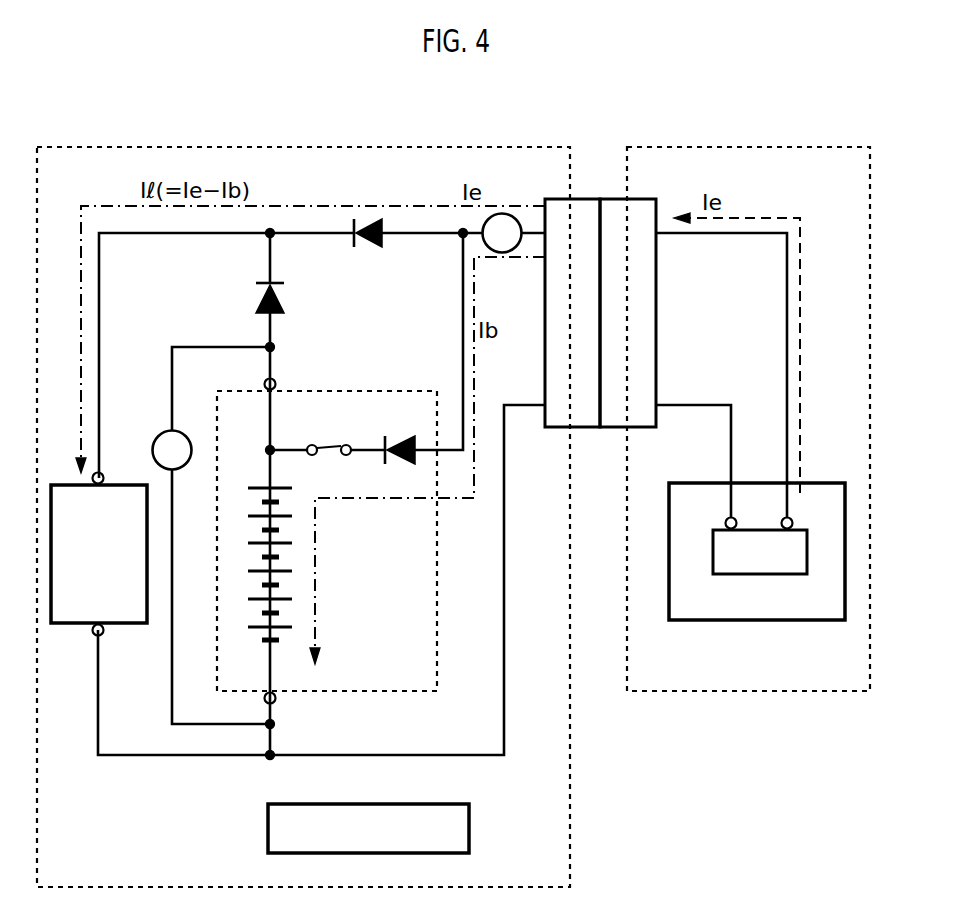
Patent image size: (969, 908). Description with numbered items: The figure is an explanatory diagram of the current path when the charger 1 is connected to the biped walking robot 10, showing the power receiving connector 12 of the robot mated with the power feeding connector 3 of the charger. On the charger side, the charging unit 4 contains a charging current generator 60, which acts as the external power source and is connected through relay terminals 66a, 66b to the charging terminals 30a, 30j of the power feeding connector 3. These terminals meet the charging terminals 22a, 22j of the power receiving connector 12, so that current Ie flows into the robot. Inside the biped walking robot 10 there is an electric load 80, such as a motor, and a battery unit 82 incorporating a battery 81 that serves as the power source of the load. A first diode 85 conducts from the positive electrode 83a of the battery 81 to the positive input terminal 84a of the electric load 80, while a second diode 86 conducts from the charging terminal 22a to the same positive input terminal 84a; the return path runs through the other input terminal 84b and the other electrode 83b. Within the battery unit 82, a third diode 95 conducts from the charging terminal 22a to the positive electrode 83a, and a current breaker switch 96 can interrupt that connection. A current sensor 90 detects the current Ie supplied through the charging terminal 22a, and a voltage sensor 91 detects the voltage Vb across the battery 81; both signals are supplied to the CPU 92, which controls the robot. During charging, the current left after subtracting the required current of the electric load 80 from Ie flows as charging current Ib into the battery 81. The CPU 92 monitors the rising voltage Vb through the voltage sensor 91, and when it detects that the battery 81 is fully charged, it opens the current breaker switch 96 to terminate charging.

The charger 1 is at (757, 147).
The power feeding connector 3 is at (637, 295).
The charging unit 4 is at (762, 621).
The biped walking robot 10 is at (425, 147).
The power receiving connector 12 is at (580, 297).
The charging terminal 22a is at (572, 234).
The charging terminal 22j is at (572, 406).
The charging terminal 30a is at (627, 234).
The charging terminal 30j is at (627, 406).
The charging current generator 60 is at (763, 575).
The relay terminal 66a is at (793, 523).
The relay terminal 66b is at (725, 523).
The electric load 80 is at (130, 626).
The battery 81 is at (290, 558).
The battery unit 82 is at (370, 696).
The positive electrode 83a is at (277, 380).
The electrode 83b is at (278, 700).
The positive input terminal 84a is at (118, 456).
The input terminal 84b is at (94, 635).
The first diode 85 is at (283, 301).
The second diode 86 is at (366, 217).
The current sensor 90 is at (503, 214).
The voltage sensor 91 is at (154, 439).
The CPU 92 is at (400, 804).
The third diode 95 is at (402, 436).
The current breaker switch 96 is at (328, 441).